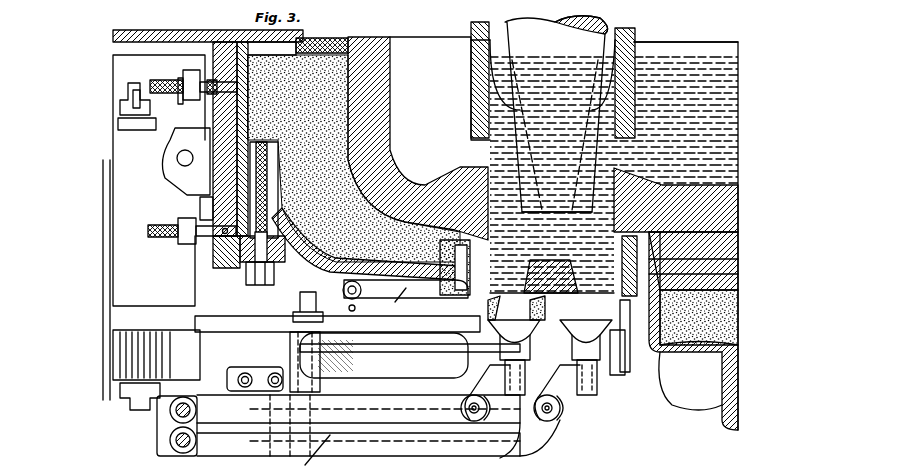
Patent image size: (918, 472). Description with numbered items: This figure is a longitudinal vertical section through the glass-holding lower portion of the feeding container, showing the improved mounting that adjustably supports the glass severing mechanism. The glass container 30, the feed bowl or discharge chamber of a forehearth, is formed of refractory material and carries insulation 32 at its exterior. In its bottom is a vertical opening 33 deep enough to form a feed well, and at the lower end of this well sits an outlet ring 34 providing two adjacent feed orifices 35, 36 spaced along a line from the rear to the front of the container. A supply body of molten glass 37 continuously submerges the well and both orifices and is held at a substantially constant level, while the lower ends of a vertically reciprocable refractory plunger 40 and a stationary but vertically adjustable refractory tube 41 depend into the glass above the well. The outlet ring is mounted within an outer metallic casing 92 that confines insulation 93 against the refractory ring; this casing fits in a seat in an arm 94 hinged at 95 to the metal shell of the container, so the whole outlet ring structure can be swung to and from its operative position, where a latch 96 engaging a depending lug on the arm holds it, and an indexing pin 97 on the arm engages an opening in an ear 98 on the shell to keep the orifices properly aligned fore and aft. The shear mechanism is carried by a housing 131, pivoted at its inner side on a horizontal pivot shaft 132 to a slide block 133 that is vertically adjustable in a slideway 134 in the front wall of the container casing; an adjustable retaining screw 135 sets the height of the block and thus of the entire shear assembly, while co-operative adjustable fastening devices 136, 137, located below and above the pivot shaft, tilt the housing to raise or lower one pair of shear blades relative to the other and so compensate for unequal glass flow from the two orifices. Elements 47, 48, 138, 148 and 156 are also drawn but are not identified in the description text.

The glass container 30 is at (305, 257).
The insulation 32 is at (374, 37).
The vertical opening 33 is at (650, 228).
The outlet ring 34 is at (700, 261).
The feed orifice 35 is at (550, 327).
The feed orifice 36 is at (690, 280).
The supply body of molten glass 37 is at (690, 95).
The refractory plunger 40 is at (585, 37).
The refractory tube 41 is at (636, 43).
The grille 47 is at (130, 385).
The bracket 48 is at (160, 420).
The outer metallic casing 92 is at (496, 285).
The insulation 93 is at (483, 245).
The arm 94 is at (405, 297).
The hinge 95 is at (350, 299).
The latch 96 is at (637, 373).
The indexing pin 97 is at (432, 297).
The ear 98 is at (404, 287).
The housing 131 is at (120, 198).
The horizontal pivot shaft 132 is at (178, 158).
The slide block 133 is at (214, 262).
The slideway 134 is at (236, 48).
The adjustable retaining screw 135 is at (240, 266).
The adjustable fastening device 136 is at (172, 240).
The adjustable fastening device 137 is at (180, 76).
The arm 138 is at (280, 430).
The roller 148 is at (558, 400).
The lever 156 is at (570, 425).